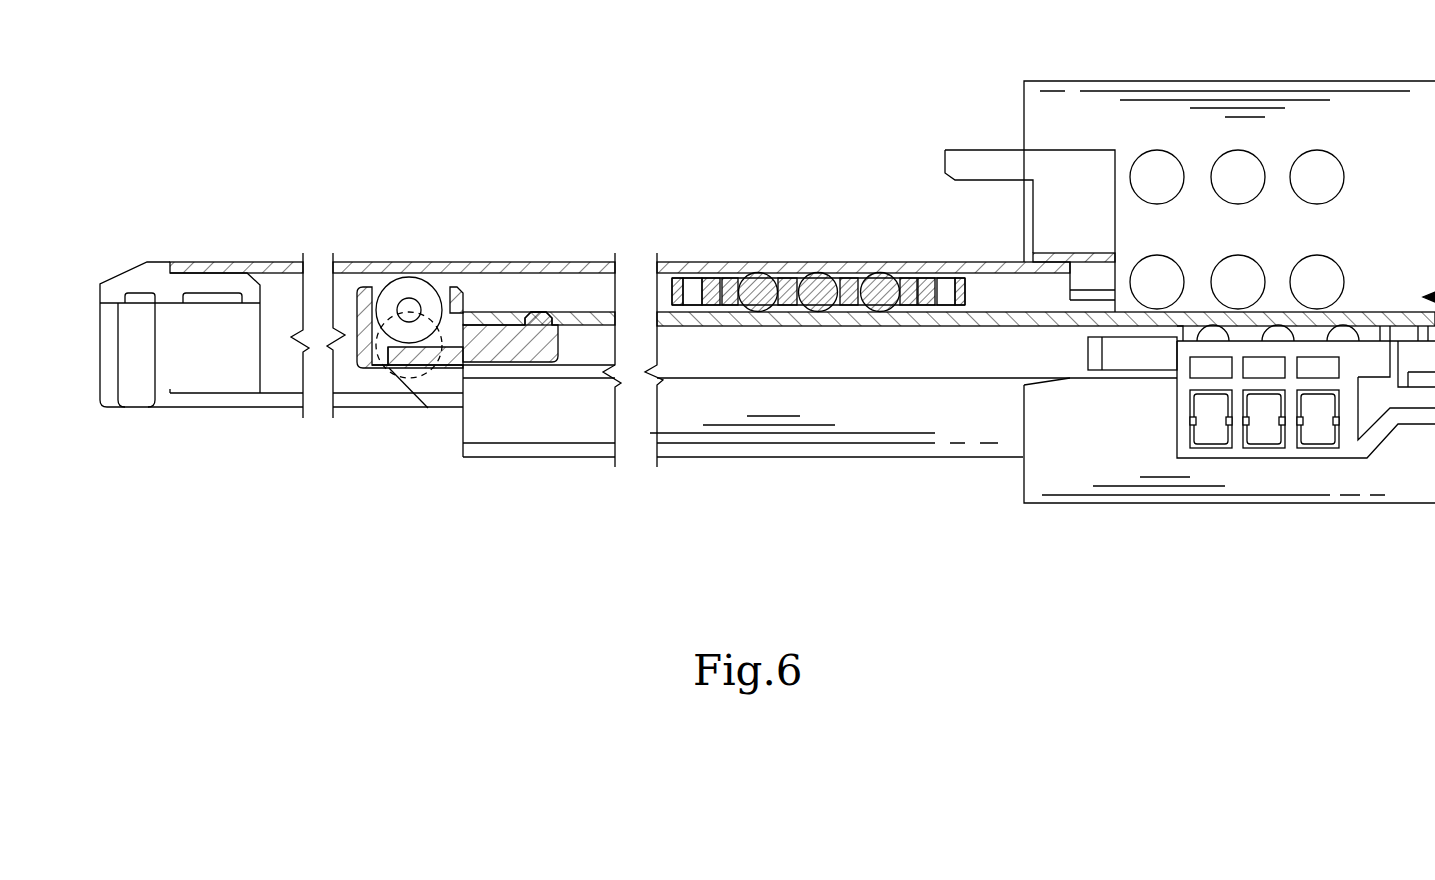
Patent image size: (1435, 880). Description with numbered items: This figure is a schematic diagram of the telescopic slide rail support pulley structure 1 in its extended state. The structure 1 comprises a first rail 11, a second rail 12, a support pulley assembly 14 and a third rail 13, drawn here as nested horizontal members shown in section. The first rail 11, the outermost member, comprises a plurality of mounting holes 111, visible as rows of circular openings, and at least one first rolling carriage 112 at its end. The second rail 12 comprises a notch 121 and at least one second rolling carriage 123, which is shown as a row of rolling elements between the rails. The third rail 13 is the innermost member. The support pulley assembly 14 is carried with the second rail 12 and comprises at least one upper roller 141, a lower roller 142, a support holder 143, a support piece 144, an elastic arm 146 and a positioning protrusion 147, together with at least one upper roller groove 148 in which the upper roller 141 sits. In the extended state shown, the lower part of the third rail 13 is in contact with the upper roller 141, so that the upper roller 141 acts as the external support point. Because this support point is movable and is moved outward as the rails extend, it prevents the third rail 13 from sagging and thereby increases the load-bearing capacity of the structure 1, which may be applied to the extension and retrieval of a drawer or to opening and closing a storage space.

The telescopic slide rail support pulley structure 1 is at (953, 563).
The first rail 11 is at (1116, 382).
The mounting holes 111 is at (1243, 158).
The first rolling carriage 112 is at (1261, 384).
The second rail 12 is at (736, 428).
The notch 121 is at (552, 313).
The second rolling carriage 123 is at (787, 283).
The third rail 13 is at (860, 263).
The support pulley assembly 14 is at (350, 294).
The upper roller 141 is at (387, 273).
The lower roller 142 is at (402, 372).
The support holder 143 is at (357, 367).
The support piece 144 is at (447, 395).
The elastic arm 146 is at (528, 364).
The positioning protrusion 147 is at (533, 323).
The upper roller groove 148 is at (441, 270).